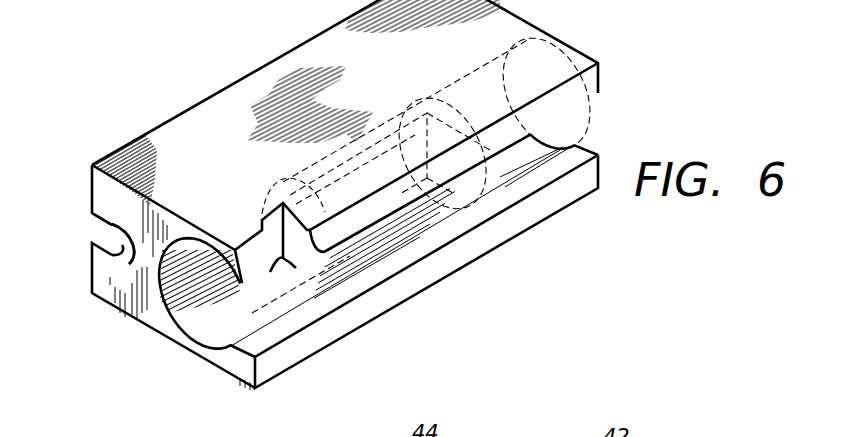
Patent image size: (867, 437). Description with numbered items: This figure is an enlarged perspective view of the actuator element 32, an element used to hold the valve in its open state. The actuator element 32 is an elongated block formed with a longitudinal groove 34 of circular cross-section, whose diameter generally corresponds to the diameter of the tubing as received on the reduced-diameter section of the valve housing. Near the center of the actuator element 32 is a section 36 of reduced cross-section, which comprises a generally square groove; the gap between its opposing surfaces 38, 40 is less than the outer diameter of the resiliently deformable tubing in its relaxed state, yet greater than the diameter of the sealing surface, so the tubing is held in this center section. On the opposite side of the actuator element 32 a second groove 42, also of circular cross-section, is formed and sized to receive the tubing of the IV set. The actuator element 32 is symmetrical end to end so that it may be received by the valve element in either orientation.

The actuator element 32 is at (186, 85).
The longitudinal groove 34 is at (217, 328).
The section of reduced cross-section 36 is at (287, 260).
The opposing surface 38 is at (418, 259).
The opposing surface 40 is at (443, 210).
The second groove 42 is at (128, 262).